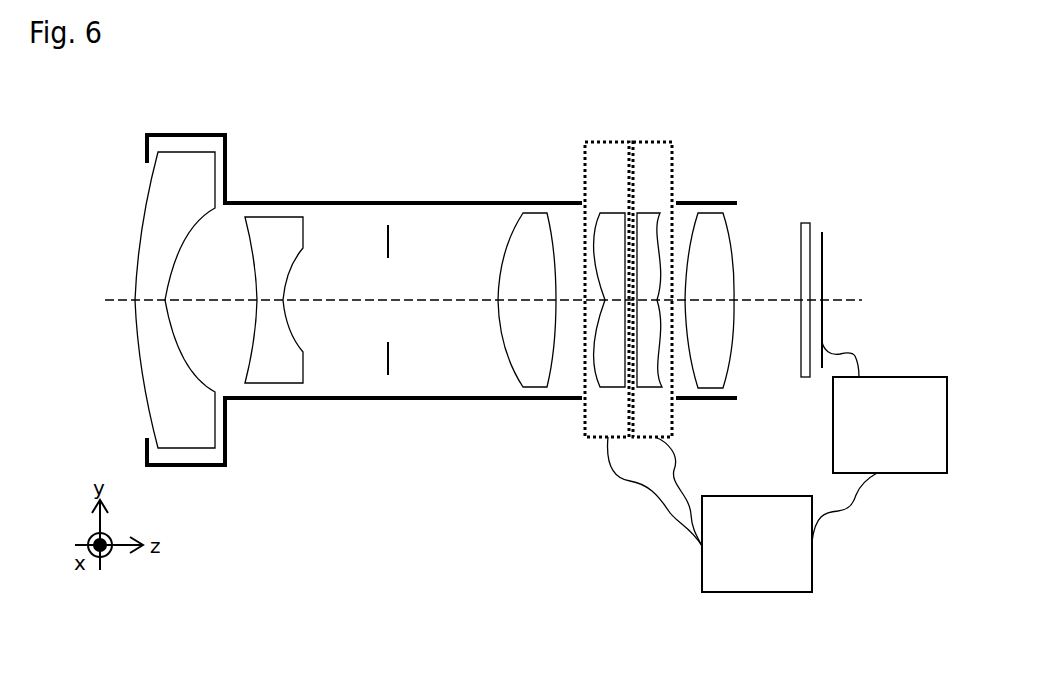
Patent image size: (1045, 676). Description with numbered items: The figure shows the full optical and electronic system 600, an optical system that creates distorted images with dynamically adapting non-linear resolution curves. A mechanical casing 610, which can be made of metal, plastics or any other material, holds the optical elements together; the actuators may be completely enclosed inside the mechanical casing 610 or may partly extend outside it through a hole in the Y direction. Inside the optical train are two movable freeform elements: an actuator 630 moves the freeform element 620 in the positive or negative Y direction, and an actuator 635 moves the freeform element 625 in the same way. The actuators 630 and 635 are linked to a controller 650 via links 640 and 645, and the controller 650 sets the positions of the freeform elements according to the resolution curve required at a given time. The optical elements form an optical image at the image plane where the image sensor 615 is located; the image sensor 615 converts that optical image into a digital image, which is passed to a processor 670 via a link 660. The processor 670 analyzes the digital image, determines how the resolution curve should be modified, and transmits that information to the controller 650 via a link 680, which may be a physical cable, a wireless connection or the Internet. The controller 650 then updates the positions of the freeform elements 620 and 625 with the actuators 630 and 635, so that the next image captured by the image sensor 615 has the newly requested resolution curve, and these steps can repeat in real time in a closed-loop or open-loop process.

The full optical and electronic system 600 is at (483, 278).
The mechanical casing 610 is at (228, 197).
The image sensor 615 is at (832, 296).
The freeform element 620 is at (612, 300).
The freeform element 625 is at (653, 300).
The actuator 630 is at (607, 289).
The actuator 635 is at (652, 289).
The link 640 is at (655, 491).
The link 645 is at (684, 491).
The controller 650 is at (757, 544).
The link 660 is at (858, 359).
The processor 670 is at (890, 425).
The link 680 is at (850, 507).